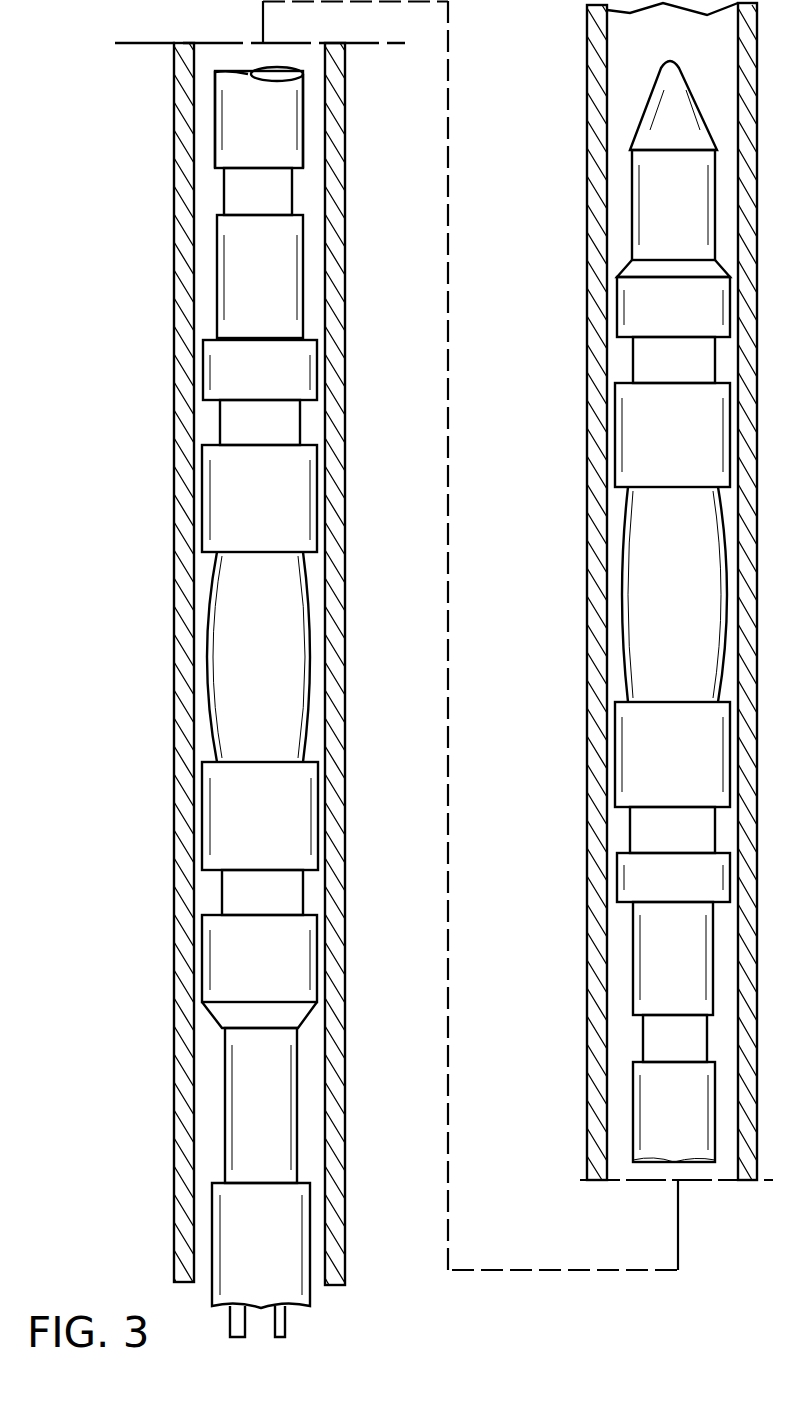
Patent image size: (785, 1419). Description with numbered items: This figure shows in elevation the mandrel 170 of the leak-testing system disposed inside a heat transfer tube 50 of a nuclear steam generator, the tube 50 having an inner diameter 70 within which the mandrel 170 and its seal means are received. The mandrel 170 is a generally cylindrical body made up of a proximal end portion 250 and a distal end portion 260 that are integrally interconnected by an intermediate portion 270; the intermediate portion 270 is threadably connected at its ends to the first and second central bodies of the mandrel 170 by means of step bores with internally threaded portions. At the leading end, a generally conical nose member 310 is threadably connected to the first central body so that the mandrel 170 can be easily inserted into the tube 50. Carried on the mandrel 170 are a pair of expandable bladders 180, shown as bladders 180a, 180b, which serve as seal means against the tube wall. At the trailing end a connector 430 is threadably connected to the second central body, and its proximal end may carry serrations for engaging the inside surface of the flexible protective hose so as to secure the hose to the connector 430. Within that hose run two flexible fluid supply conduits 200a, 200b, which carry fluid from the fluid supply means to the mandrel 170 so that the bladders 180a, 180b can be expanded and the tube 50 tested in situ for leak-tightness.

The heat transfer tube 50 is at (344, 92).
The inner diameter 70 is at (320, 62).
The mandrel 170 is at (401, 704).
The expandable bladders 180 is at (293, 1233).
The expandable bladder 180a is at (638, 617).
The expandable bladder 180b is at (293, 662).
The flexible fluid supply conduit 200a is at (233, 1330).
The flexible fluid supply conduit 200b is at (287, 1323).
The proximal end portion 250 is at (643, 373).
The distal end portion 260 is at (288, 430).
The intermediate portion 270 is at (290, 147).
The nose member 310 is at (643, 130).
The connector 430 is at (297, 970).